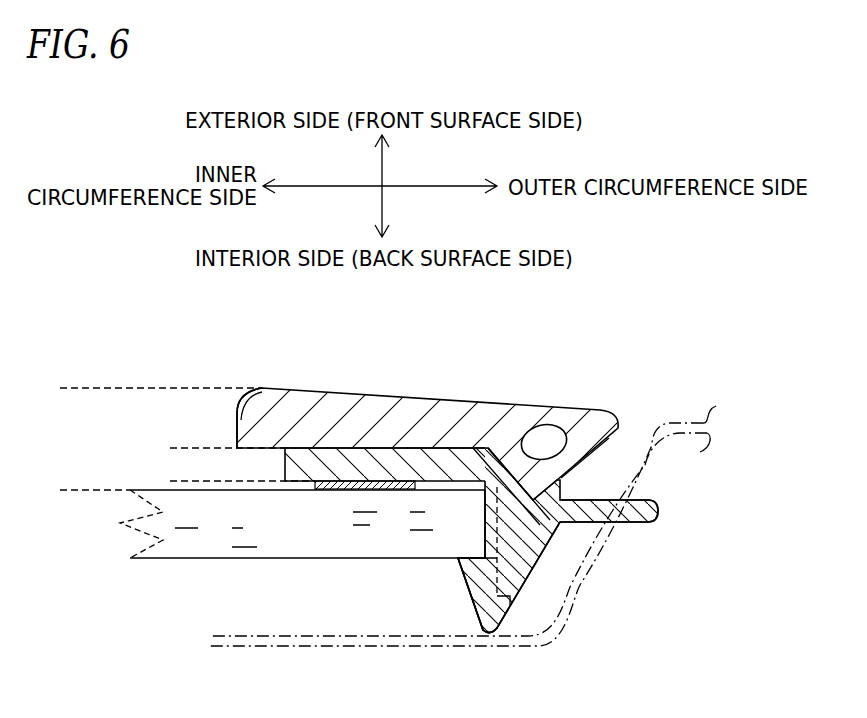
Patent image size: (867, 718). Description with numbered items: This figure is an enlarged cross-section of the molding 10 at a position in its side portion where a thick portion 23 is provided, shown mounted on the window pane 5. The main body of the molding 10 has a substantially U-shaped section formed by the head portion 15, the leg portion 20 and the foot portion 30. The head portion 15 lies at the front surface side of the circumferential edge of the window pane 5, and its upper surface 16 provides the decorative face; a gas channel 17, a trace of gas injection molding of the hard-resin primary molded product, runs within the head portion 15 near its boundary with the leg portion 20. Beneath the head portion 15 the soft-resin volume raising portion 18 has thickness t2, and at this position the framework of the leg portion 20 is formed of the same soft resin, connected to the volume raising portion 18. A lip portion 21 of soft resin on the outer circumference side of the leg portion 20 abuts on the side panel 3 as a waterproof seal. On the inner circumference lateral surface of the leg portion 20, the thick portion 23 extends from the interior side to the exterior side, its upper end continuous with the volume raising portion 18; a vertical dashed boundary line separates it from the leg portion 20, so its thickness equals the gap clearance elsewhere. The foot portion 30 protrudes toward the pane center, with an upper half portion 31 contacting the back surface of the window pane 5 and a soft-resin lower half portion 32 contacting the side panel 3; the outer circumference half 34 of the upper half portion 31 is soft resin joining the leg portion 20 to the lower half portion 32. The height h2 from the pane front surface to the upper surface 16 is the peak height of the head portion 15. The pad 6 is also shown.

The side panel 3 is at (650, 460).
The window pane 5 is at (197, 548).
The cushion pad 6 is at (348, 492).
The molding 10 is at (450, 488).
The head portion 15 is at (388, 407).
The upper surface 16 is at (335, 390).
The gas channel 17 is at (545, 442).
The volume raising portion 18 is at (428, 467).
The leg portion 20 is at (535, 530).
The lip portion 21 is at (596, 505).
The thick portion 23 is at (485, 517).
The foot portion 30 is at (508, 602).
The upper half portion 31 is at (474, 577).
The lower half portion 32 is at (490, 635).
The half of the outer circumference side 34 is at (502, 598).
The height h2 is at (72, 390).
The thickness t2 is at (180, 450).